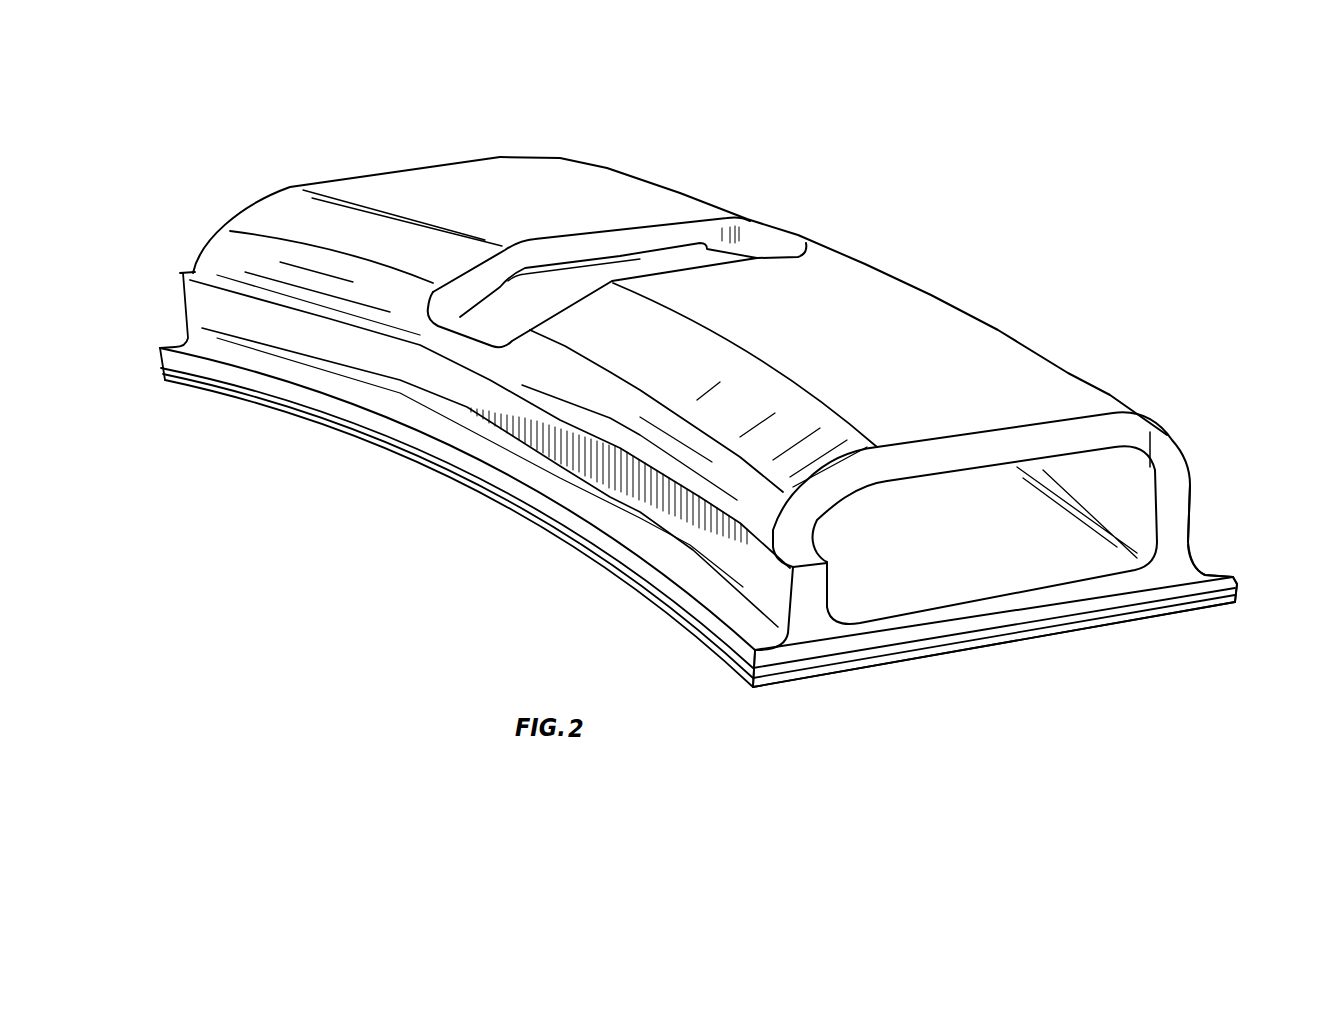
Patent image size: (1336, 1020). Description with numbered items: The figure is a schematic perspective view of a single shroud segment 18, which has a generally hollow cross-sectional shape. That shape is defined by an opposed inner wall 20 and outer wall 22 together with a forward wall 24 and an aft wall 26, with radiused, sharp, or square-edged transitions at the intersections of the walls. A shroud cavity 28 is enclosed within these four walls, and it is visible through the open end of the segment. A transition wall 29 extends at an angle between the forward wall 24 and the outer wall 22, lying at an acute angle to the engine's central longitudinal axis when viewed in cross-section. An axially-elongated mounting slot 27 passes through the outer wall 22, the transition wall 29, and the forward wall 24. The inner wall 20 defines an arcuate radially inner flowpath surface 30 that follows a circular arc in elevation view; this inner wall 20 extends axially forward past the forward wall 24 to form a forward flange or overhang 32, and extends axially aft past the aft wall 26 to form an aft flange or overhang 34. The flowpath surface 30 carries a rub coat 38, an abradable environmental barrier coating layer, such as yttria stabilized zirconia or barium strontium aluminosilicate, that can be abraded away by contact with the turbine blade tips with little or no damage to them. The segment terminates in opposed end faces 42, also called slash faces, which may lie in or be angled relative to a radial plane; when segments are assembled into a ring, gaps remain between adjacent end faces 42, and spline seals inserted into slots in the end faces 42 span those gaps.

The shroud segment 18 is at (768, 126).
The inner wall 20 is at (1066, 548).
The outer wall 22 is at (1033, 388).
The forward wall 24 is at (205, 302).
The aft wall 26 is at (1192, 483).
The mounting slot 27 is at (760, 238).
The shroud cavity 28 is at (975, 570).
The transition wall 29 is at (265, 222).
The flowpath surface 30 is at (950, 655).
The forward flange 32 is at (733, 613).
The aft flange 34 is at (1200, 565).
The rub coat 38 is at (785, 688).
The end face 42 is at (1155, 577).